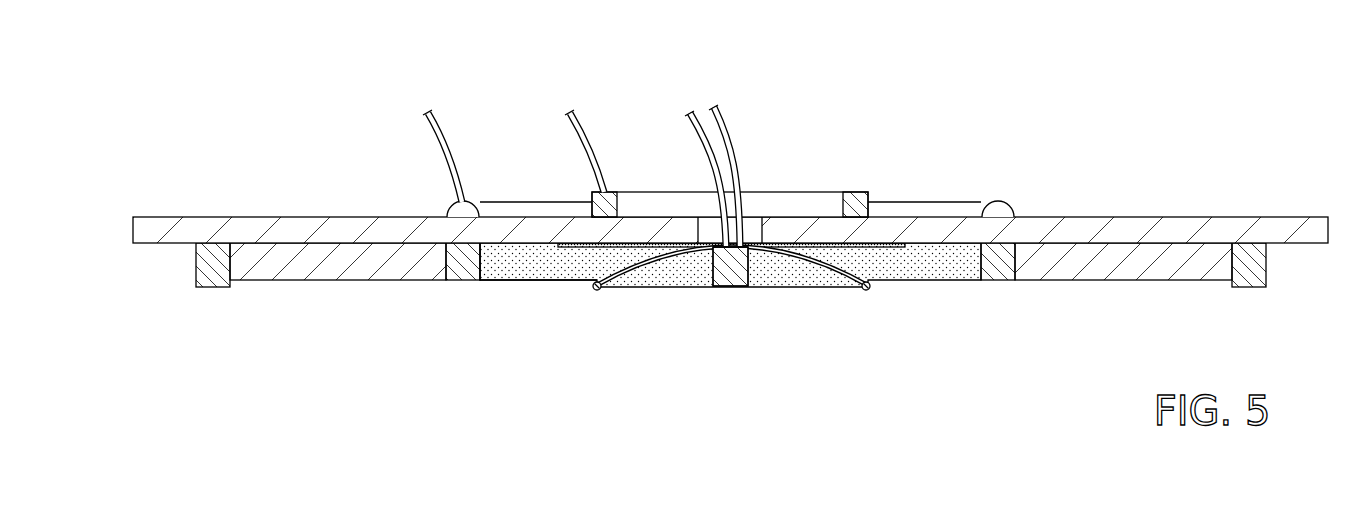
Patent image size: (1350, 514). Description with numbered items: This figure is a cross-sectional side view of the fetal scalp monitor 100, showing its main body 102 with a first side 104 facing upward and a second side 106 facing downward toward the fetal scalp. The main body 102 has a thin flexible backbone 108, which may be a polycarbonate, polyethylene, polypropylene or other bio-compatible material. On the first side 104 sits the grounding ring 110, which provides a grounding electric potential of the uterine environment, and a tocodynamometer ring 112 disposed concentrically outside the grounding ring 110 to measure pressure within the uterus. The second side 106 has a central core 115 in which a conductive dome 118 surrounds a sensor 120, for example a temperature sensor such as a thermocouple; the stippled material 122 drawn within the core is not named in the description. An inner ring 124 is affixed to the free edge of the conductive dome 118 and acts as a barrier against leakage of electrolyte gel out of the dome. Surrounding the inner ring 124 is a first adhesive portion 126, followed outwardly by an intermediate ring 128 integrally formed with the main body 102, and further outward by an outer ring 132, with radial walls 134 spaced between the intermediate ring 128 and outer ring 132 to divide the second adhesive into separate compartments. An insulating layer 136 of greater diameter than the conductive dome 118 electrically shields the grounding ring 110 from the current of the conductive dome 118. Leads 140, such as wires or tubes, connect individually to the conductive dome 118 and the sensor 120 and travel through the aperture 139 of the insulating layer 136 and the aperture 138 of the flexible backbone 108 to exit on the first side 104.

The fetal scalp monitor 100 is at (158, 158).
The main body 102 is at (125, 118).
The first side 104 is at (343, 178).
The second side 106 is at (157, 332).
The flexible backbone 108 is at (1301, 245).
The grounding ring 110 is at (856, 192).
The tocodynamometer ring 112 is at (1002, 201).
The central core 115 is at (856, 337).
The conductive dome 118 is at (796, 258).
The sensor 120 is at (727, 287).
The compliant fill layer 122 is at (655, 272).
The inner ring 124 is at (598, 291).
The first adhesive portion 126 is at (511, 258).
The intermediate ring 128 is at (995, 281).
The outer ring 132 is at (1248, 282).
The radial walls 134 is at (1172, 281).
The insulating layer 136 is at (587, 248).
The aperture 138 is at (760, 240).
The aperture 139 is at (715, 247).
The leads 140 is at (422, 113).